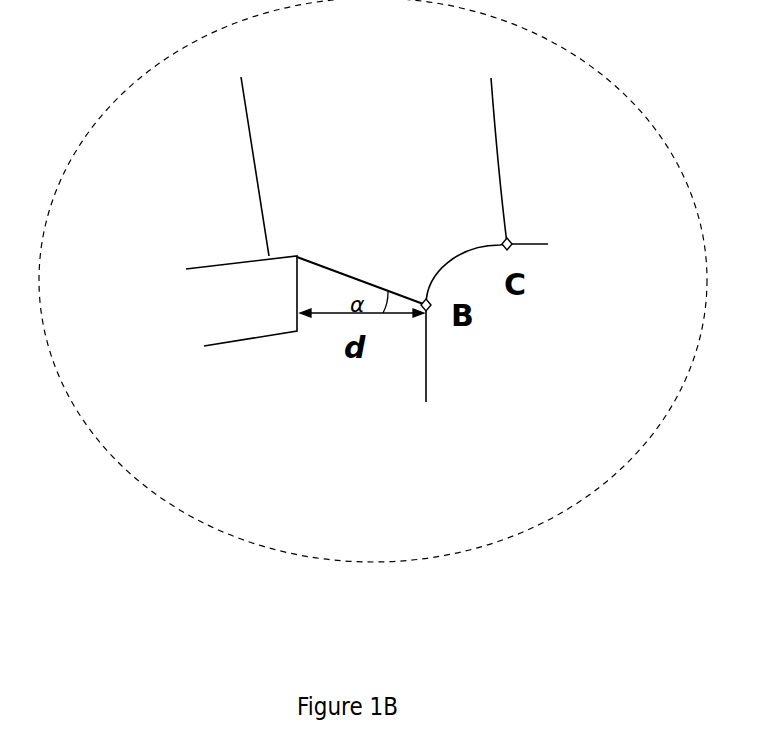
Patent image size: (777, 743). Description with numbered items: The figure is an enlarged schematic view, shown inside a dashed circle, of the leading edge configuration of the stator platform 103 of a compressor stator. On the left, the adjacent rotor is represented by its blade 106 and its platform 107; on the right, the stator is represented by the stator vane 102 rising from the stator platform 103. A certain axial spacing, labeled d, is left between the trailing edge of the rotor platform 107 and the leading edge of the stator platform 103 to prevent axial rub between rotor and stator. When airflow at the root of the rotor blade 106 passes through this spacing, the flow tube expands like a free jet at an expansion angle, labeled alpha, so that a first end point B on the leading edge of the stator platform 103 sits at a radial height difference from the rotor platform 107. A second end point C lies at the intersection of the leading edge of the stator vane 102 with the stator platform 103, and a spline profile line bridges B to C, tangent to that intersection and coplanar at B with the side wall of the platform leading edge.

The stator vane 102 is at (527, 161).
The stator platform 103 is at (466, 323).
The rotor blade 106 is at (234, 166).
The rotor platform 107 is at (241, 301).